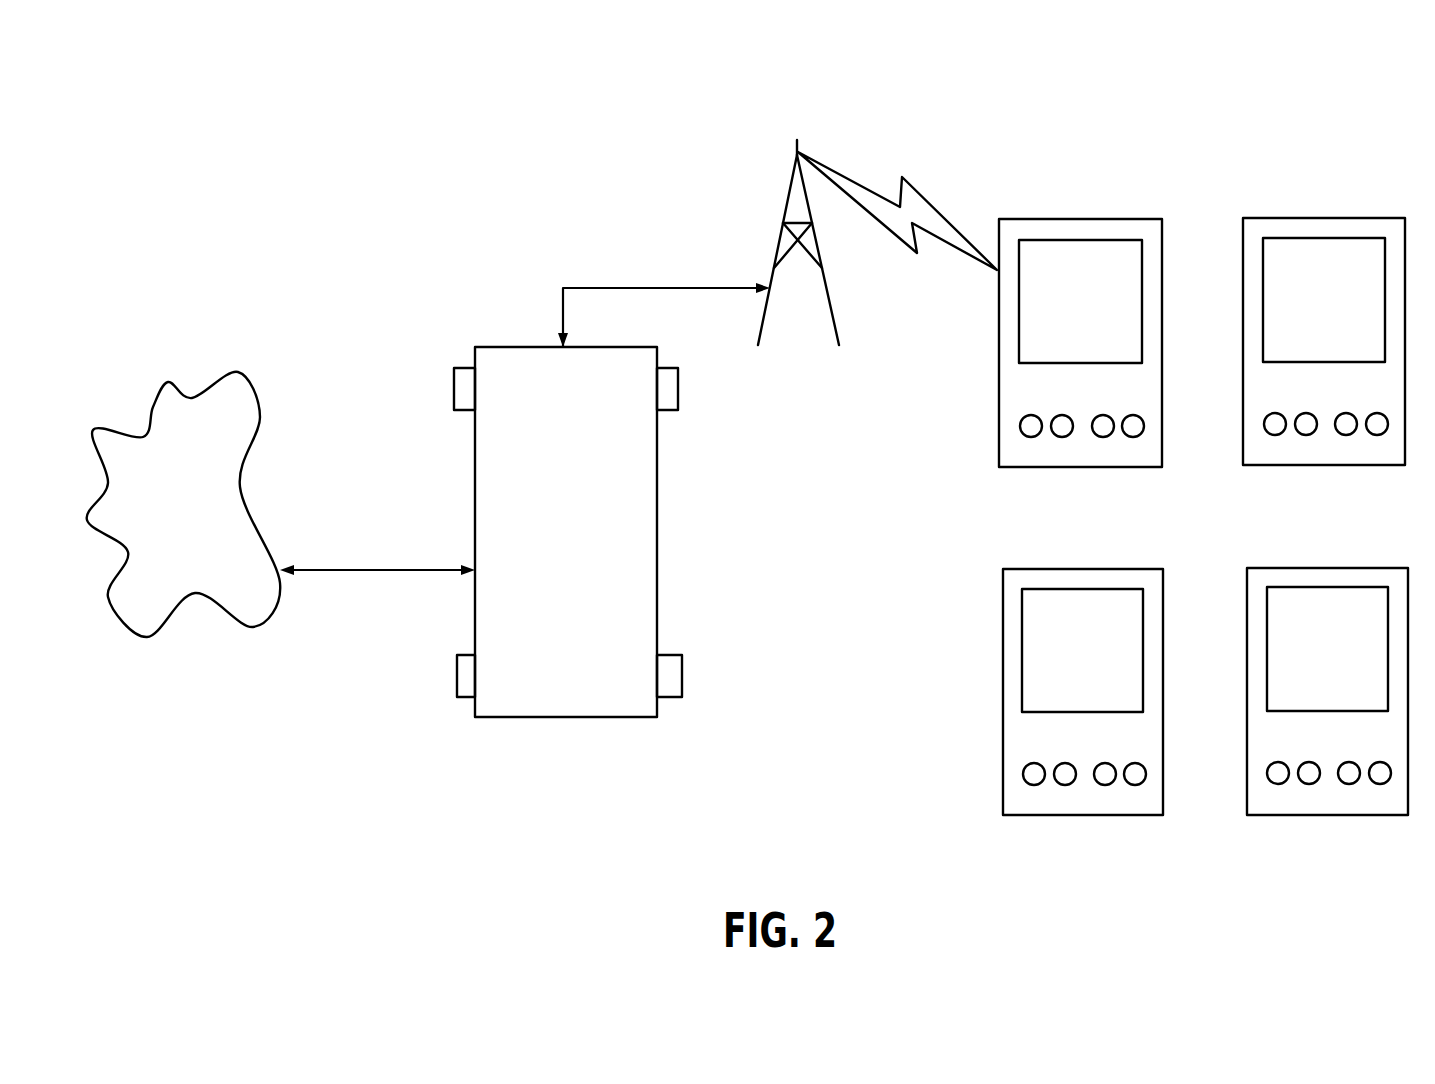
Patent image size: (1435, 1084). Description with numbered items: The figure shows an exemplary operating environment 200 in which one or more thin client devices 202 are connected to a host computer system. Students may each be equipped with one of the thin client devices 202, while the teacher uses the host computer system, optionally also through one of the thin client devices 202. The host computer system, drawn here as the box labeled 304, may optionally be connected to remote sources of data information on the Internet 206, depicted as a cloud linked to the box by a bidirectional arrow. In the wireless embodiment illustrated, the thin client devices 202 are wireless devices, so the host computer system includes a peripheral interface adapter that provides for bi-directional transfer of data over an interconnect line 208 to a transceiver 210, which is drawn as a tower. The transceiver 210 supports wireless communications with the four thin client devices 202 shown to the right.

The operating environment 200 is at (455, 172).
The thin client devices 202 is at (1123, 218).
The Internet 206 is at (253, 390).
The interconnect line 208 is at (665, 287).
The transceiver 210 is at (788, 203).
The server 304 is at (597, 717).